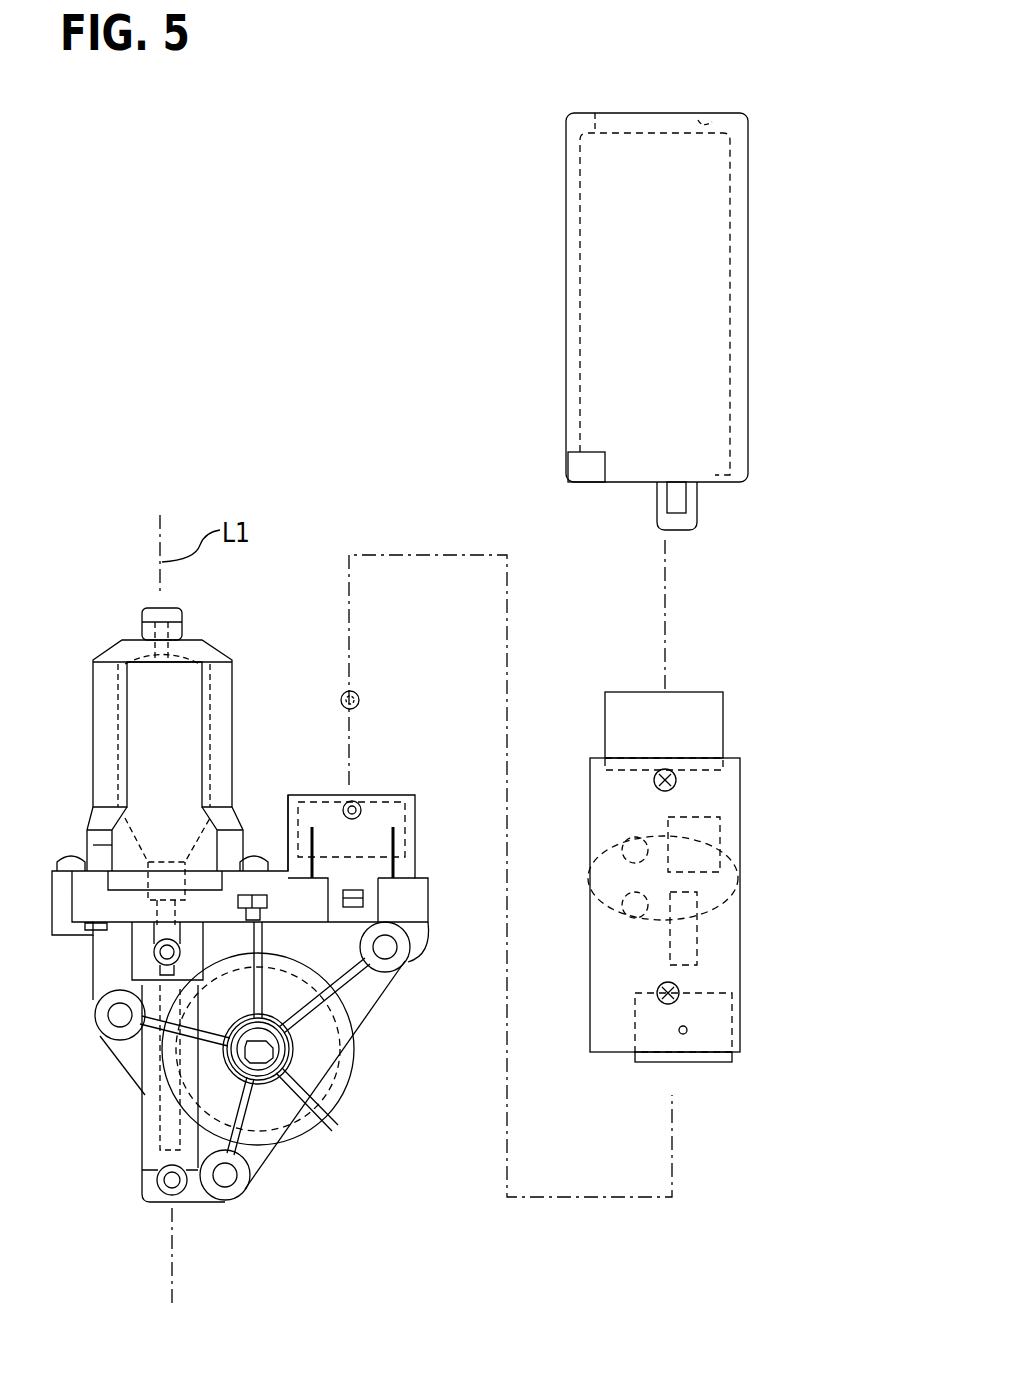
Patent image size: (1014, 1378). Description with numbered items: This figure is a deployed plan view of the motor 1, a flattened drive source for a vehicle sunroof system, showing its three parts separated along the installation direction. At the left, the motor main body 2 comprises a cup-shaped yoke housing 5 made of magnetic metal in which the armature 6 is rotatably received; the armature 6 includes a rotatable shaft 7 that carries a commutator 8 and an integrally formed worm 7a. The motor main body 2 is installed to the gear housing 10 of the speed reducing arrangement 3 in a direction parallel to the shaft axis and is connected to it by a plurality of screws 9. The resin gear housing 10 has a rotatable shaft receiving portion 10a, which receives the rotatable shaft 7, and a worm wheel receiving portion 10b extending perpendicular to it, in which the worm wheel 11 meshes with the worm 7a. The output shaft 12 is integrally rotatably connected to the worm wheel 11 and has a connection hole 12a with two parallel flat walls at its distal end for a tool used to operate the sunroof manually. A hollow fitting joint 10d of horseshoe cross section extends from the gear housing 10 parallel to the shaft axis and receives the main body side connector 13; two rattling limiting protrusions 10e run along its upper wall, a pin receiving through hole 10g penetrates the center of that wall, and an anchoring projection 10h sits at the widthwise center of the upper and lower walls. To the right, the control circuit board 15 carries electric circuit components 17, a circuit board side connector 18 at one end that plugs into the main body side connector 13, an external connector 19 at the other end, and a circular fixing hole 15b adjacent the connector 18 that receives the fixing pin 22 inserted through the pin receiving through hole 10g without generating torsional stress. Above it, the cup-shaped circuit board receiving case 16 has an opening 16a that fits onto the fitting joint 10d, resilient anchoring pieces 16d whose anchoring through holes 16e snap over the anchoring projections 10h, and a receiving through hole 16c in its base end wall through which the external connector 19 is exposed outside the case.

The motor 1 is at (246, 334).
The motor main body 2 is at (146, 757).
The speed reducing arrangement 3 is at (232, 1062).
The yoke housing 5 is at (95, 694).
The armature 6 is at (116, 742).
The rotatable shaft 7 is at (150, 896).
The worm 7a is at (145, 1092).
The commutator 8 is at (120, 842).
The screws 9 is at (62, 860).
The gear housing 10 is at (251, 864).
The rotatable shaft receiving portion 10a is at (144, 1144).
The worm wheel receiving portion 10b is at (305, 1095).
The fitting joint 10d is at (293, 797).
The rattling limiting protrusions 10e is at (392, 842).
The pin receiving through hole 10g is at (358, 803).
The anchoring projection 10h is at (364, 896).
The worm wheel 11 is at (300, 1142).
The output shaft 12 is at (286, 1032).
The connection hole 12a is at (250, 1045).
The main body side connector 13 is at (420, 806).
The control circuit board 15 is at (663, 930).
The fixing hole 15b is at (680, 1034).
The circuit board receiving case 16 is at (641, 306).
The opening 16a is at (738, 470).
The receiving through hole 16c is at (695, 112).
The anchoring piece 16d is at (660, 522).
The anchoring through hole 16e is at (672, 498).
The electric circuit components 17 is at (590, 880).
The circuit board side connector 18 is at (700, 1062).
The external connector 19 is at (712, 722).
The fixing pin 22 is at (360, 698).